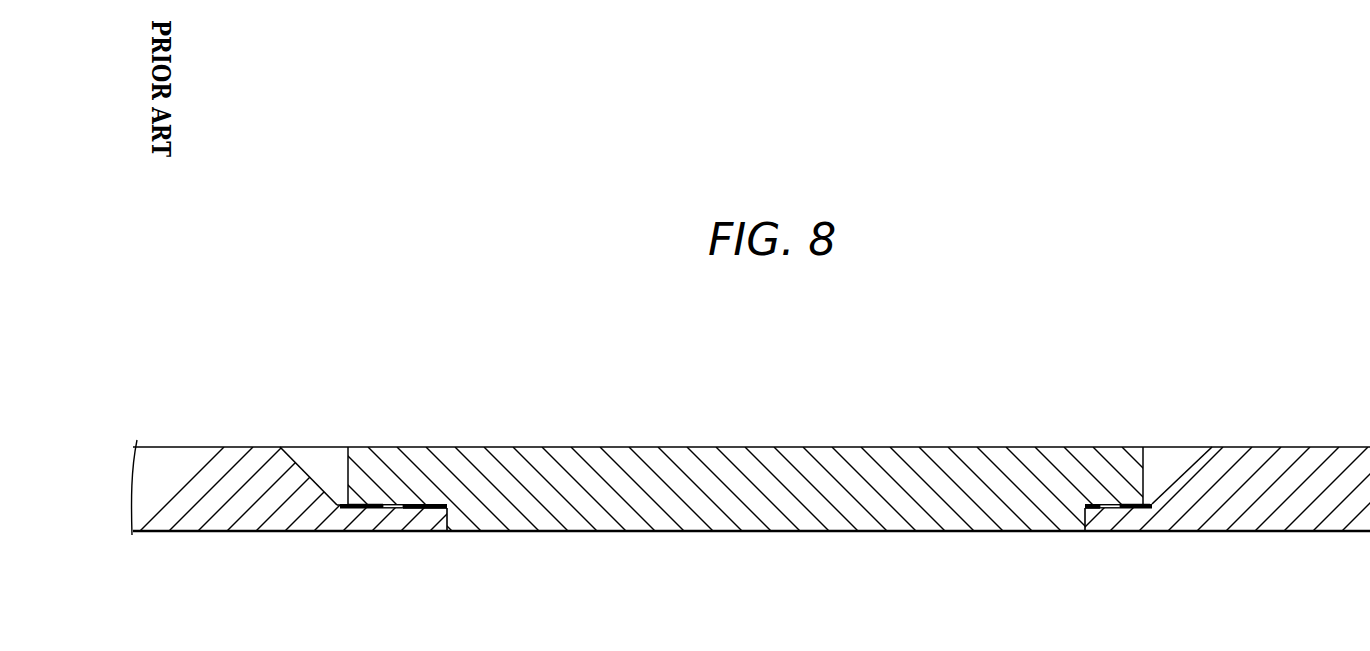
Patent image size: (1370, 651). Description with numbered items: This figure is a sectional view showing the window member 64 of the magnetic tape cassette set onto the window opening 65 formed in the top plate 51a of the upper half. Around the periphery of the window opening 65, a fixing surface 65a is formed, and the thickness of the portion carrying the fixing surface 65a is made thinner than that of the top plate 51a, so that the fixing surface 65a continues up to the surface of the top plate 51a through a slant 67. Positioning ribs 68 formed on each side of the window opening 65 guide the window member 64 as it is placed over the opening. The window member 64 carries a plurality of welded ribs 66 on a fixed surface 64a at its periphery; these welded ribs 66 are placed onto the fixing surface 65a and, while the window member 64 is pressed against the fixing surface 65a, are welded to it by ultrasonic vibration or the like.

The top plate 51a is at (1276, 446).
The window member 64 is at (774, 446).
The fixed surface 64a is at (363, 532).
The window opening 65 is at (448, 516).
The fixing surface 65a is at (433, 532).
The welded ribs 66 is at (395, 532).
The slant 67 is at (306, 468).
The positioning ribs 68 is at (333, 466).